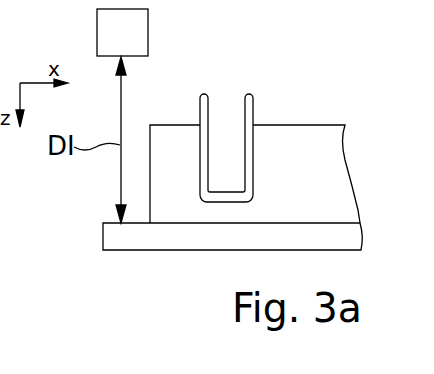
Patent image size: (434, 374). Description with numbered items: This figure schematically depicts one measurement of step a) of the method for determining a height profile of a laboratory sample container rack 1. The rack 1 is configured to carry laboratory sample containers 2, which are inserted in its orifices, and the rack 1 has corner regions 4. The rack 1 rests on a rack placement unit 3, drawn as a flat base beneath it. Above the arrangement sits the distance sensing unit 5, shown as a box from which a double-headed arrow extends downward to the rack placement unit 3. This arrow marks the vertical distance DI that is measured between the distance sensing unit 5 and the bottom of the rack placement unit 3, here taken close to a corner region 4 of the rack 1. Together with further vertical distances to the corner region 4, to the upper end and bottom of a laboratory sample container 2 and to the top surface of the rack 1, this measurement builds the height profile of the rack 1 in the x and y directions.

The laboratory sample container rack 1 is at (310, 140).
The laboratory sample container 2 is at (247, 93).
The rack placement unit 3 is at (103, 241).
The corner region 4 is at (172, 122).
The distance sensing unit 5 is at (114, 46).